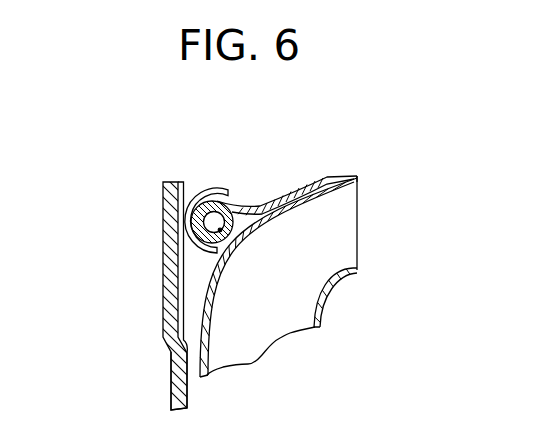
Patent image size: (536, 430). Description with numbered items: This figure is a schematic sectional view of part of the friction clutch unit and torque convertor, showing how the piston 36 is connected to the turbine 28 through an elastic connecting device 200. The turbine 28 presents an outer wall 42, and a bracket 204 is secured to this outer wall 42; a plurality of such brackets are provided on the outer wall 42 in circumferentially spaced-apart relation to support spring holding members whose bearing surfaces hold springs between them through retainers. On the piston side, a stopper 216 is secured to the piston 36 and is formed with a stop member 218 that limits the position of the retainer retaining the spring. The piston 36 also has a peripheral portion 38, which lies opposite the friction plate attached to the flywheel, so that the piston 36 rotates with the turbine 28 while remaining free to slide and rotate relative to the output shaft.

The elastic connecting device 200 is at (232, 166).
The stop member 218 is at (213, 188).
The bracket 204 is at (297, 185).
The outer wall 42 is at (342, 175).
The turbine 28 is at (340, 225).
The peripheral portion 38 is at (165, 208).
The stopper 216 is at (183, 278).
The piston 36 is at (171, 383).